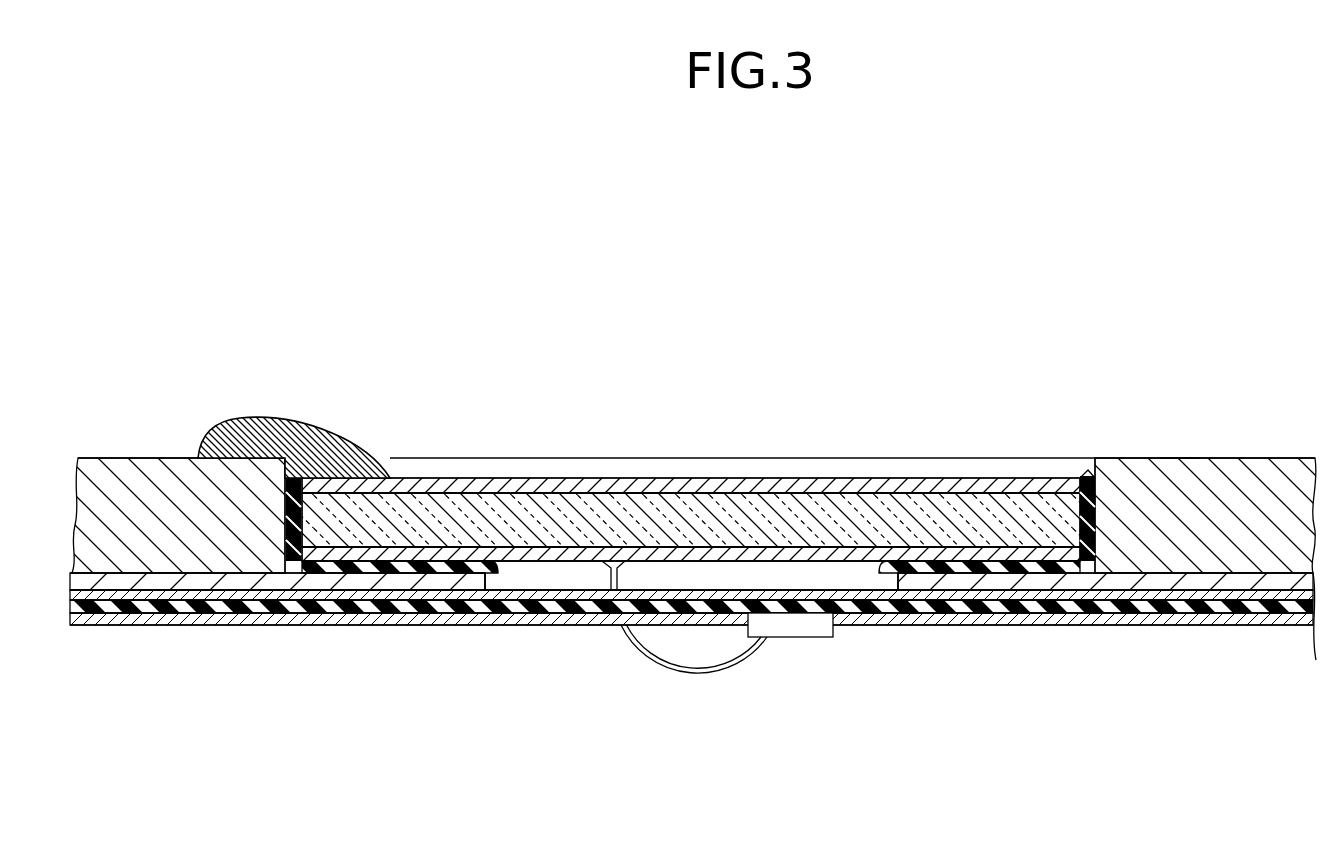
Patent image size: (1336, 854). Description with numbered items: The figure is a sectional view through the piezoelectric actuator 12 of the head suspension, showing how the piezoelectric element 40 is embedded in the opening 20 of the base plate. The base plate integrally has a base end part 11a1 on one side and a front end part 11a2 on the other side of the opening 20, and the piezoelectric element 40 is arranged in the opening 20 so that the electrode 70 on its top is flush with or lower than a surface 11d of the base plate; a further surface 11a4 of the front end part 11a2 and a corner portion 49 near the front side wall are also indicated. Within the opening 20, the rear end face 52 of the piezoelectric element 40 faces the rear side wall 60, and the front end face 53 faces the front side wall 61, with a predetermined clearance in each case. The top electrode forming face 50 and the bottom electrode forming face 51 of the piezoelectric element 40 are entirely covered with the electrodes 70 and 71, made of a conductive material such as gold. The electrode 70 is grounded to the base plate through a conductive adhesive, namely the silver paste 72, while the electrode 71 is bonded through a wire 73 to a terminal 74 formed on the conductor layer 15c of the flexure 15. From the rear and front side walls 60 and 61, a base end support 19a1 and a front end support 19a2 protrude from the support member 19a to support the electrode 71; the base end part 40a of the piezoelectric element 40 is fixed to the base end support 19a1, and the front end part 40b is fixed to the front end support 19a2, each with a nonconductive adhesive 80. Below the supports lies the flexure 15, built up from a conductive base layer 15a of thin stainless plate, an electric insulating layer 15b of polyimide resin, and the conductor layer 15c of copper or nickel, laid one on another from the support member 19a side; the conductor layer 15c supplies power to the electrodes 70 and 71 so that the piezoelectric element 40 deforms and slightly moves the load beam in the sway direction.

The base end part 11a1 is at (117, 457).
The rear end face 52 is at (287, 533).
The rear side wall 60 is at (303, 527).
The silver paste 72 is at (360, 423).
The base end part 40a is at (357, 522).
The opening 20 is at (511, 349).
The electrode forming face 50 is at (587, 493).
The piezoelectric element 40 is at (719, 443).
The electrode 70 is at (872, 478).
The piezoelectric actuator 12 is at (993, 310).
The front end part 40b is at (1047, 492).
The front side wall 61 is at (1063, 476).
The corner portion 49 is at (1093, 476).
The front end face 53 is at (1105, 490).
The surface 11d is at (1155, 457).
The surface of housing 11a4 is at (1190, 457).
The front end part 11a2 is at (1283, 457).
The nonconductive adhesive 80 is at (303, 575).
The base end support 19a1 is at (483, 578).
The electrode forming face 51 is at (568, 547).
The wire 73 is at (690, 670).
The terminal 74 is at (805, 627).
The electrode 71 is at (850, 561).
The front end support 19a2 is at (947, 583).
The support member 19a is at (1066, 575).
The conductive base layer 15a is at (1123, 600).
The electric insulating layer 15b is at (1172, 607).
The conductor layer 15c is at (1230, 615).
The flexure 15 is at (1310, 712).